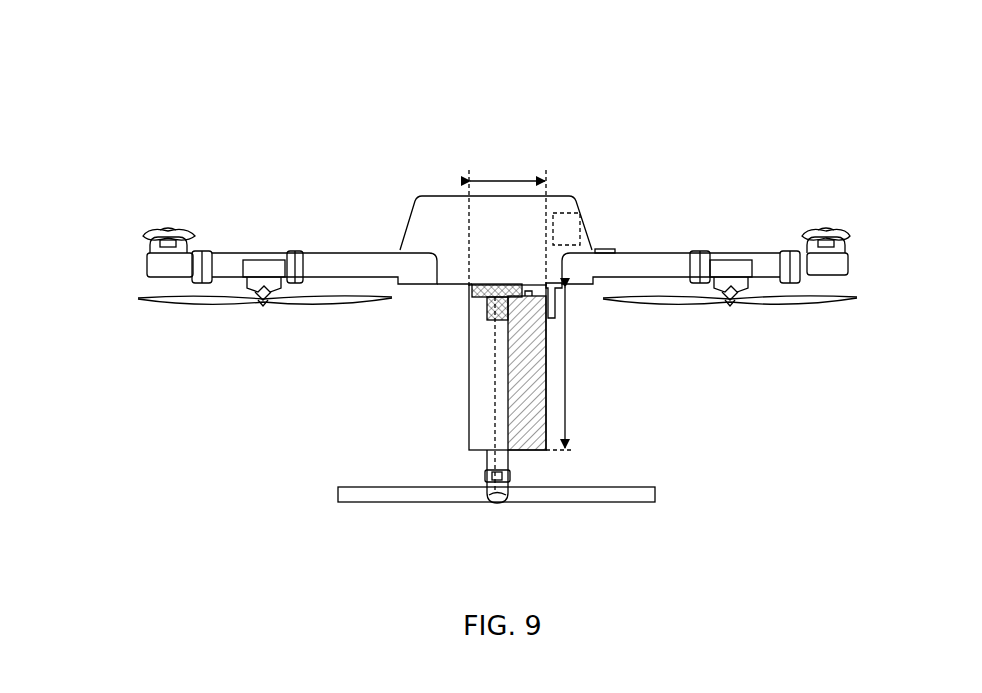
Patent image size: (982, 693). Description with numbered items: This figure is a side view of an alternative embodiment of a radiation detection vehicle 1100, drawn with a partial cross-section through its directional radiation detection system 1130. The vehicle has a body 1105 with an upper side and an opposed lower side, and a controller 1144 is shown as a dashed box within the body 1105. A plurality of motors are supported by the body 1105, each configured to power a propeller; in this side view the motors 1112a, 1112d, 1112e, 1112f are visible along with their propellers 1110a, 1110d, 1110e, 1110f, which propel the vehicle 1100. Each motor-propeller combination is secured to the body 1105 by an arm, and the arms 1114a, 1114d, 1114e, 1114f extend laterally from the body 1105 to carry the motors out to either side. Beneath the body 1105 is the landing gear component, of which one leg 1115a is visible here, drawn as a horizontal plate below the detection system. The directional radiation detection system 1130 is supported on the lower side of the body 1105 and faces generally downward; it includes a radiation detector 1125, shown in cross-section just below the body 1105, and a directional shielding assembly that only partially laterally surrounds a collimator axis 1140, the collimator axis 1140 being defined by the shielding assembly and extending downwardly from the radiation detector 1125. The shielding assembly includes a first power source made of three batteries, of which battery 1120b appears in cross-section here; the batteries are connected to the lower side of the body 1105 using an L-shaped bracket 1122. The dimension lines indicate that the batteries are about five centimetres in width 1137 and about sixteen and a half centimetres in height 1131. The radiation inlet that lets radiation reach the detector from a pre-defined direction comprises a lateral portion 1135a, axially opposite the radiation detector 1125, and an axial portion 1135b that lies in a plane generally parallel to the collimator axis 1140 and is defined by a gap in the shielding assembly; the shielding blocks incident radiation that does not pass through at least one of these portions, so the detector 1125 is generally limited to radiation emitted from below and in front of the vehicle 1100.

The radiation detection vehicle 1100 is at (253, 97).
The body 1105 is at (438, 207).
The propeller 1110a is at (197, 303).
The propeller 1110d is at (792, 305).
The propeller 1110e is at (848, 232).
The propeller 1110f is at (153, 230).
The motor 1112a is at (265, 265).
The motor 1112d is at (730, 272).
The motor 1112e is at (835, 252).
The motor 1112f is at (155, 248).
The arm 1114a is at (370, 258).
The arm 1114d is at (640, 258).
The arm 1114e is at (765, 258).
The arm 1114f is at (225, 258).
The leg 1115a is at (610, 495).
The battery 1120b is at (522, 443).
The L-shaped bracket 1122 is at (553, 283).
The radiation detector 1125 is at (493, 297).
The directional radiation detection system 1130 is at (547, 463).
The height 1131 is at (567, 352).
The lateral portion 1135a is at (488, 453).
The axial portion 1135b is at (465, 370).
The width 1137 is at (508, 178).
The collimator axis 1140 is at (495, 398).
The controller 1144 is at (567, 222).